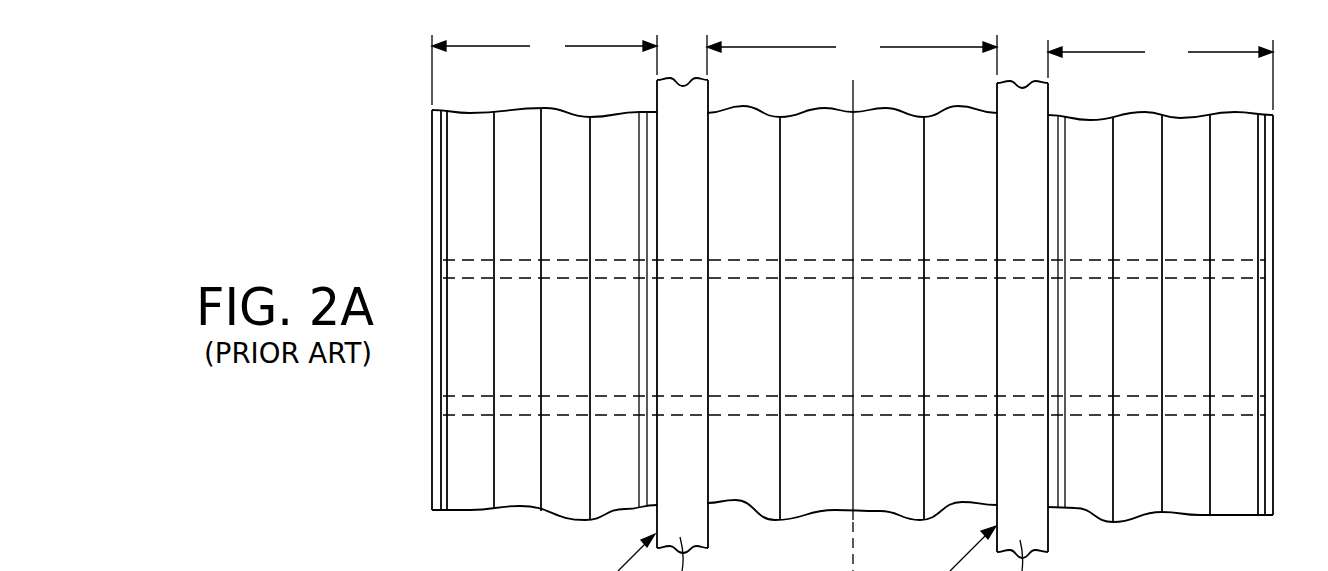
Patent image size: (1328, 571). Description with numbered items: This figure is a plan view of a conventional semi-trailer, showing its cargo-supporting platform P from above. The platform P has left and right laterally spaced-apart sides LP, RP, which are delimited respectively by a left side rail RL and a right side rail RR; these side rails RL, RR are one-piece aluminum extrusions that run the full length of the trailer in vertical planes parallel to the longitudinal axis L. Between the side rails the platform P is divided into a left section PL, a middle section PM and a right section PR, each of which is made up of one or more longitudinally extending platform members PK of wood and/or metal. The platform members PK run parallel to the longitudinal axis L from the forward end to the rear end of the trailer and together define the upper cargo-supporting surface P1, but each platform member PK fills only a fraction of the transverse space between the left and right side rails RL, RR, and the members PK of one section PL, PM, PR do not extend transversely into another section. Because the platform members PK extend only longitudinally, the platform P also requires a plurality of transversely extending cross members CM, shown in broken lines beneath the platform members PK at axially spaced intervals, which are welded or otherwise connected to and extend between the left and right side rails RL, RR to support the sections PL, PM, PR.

The left platform section PL is at (544, 70).
The middle platform section PM is at (852, 55).
The right platform section PR is at (1160, 75).
The left side of platform LP is at (452, 110).
The cargo-supporting platform P is at (738, 107).
The longitudinal axis L is at (856, 90).
The right side of platform RP is at (1182, 137).
The upper cargo-supporting surface P1 is at (744, 213).
The cross members CM is at (833, 272).
The left side rail RL is at (448, 490).
The right side rail RR is at (1258, 516).
The platform members PK is at (520, 497).